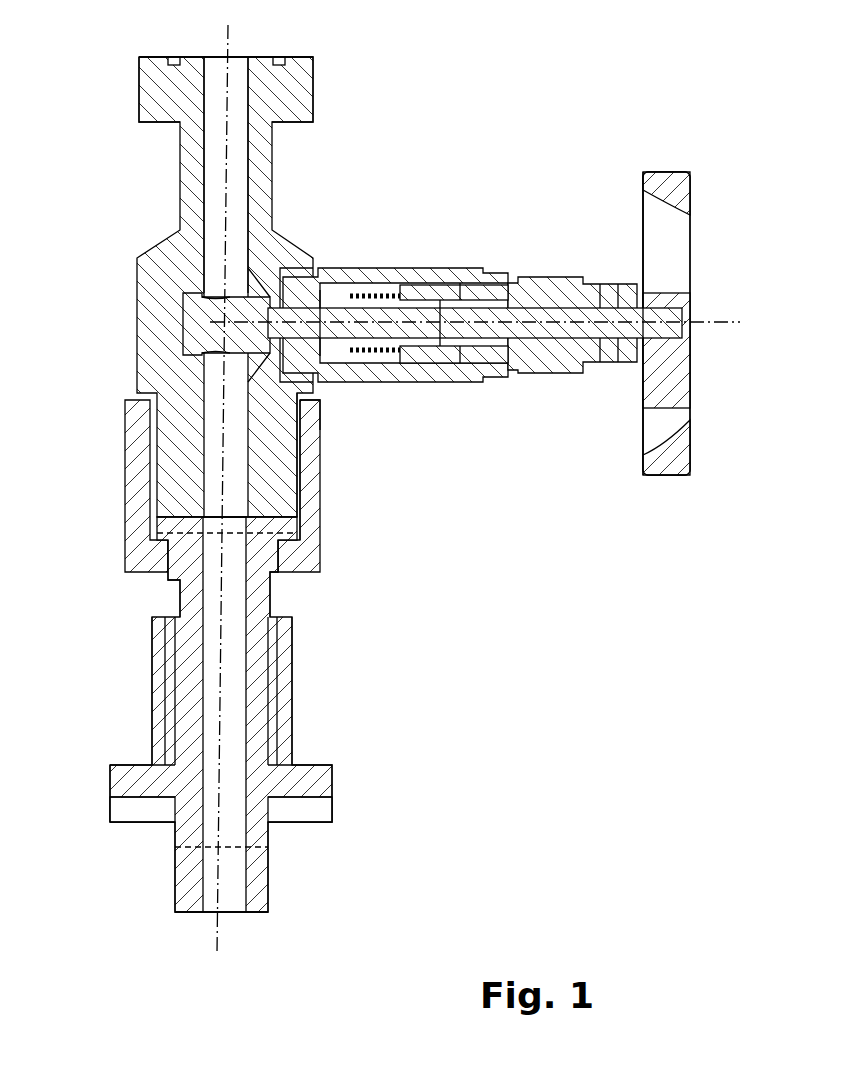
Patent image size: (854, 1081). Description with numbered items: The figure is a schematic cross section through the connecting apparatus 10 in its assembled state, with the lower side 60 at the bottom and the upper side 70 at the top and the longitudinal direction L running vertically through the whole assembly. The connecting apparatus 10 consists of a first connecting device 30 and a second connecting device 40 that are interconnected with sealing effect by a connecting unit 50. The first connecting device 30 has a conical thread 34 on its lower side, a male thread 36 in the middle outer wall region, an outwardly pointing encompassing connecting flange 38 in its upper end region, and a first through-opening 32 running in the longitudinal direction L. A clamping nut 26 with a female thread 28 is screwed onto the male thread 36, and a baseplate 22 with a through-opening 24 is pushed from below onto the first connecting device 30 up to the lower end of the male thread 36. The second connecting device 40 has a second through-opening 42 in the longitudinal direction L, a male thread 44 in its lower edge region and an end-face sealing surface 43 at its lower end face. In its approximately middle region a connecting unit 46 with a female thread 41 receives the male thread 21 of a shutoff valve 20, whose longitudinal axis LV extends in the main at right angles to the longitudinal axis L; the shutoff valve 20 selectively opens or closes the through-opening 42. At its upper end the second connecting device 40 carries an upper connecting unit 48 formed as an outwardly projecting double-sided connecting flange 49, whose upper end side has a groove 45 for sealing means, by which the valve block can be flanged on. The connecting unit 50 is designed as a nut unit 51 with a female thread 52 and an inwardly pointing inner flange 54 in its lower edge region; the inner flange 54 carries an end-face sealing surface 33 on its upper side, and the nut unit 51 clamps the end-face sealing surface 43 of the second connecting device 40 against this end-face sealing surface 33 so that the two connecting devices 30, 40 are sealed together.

The connecting apparatus 10 is at (570, 672).
The shutoff valve 20 is at (543, 278).
The male thread 21 is at (253, 292).
The baseplate 22 is at (328, 784).
The through-opening 24 is at (328, 768).
The clamping nut 26 is at (285, 725).
The female thread 28 is at (286, 658).
The first connecting device 30 is at (128, 666).
The first through-opening 32 is at (268, 833).
The end-face sealing surface 33 is at (183, 517).
The conical thread 34 is at (270, 881).
The male thread 36 is at (282, 697).
The connecting flange 38 is at (288, 537).
The second connecting device 40 is at (104, 291).
The female thread 41 is at (290, 255).
The second through-opening 42 is at (246, 197).
The end-face sealing surface 43 is at (183, 525).
The male thread 44 is at (300, 490).
The groove 45 is at (278, 56).
The connecting unit 46 is at (262, 268).
The upper connecting unit 48 is at (326, 98).
The connecting flange 49 is at (291, 88).
The connecting unit 50 is at (114, 472).
The nut unit 51 is at (321, 425).
The female thread 52 is at (290, 466).
The inner flange 54 is at (287, 560).
The lower side 60 is at (405, 1003).
The upper side 70 is at (480, 53).
The longitudinal direction L is at (215, 930).
The longitudinal axis of the shutoff valve LV is at (555, 338).